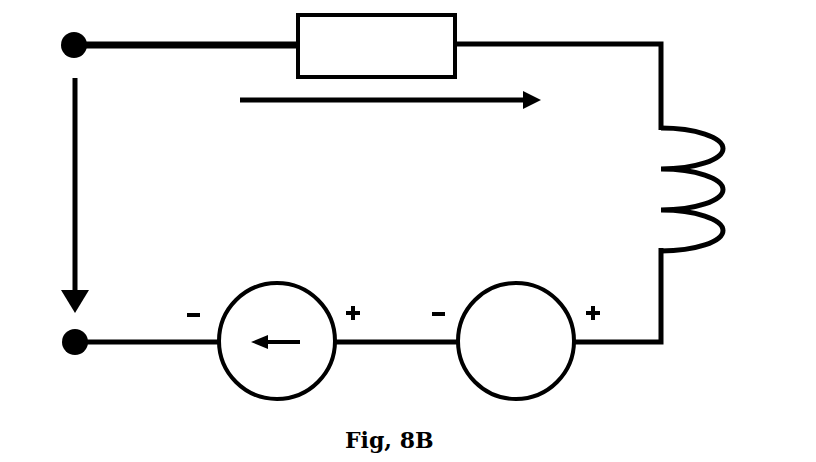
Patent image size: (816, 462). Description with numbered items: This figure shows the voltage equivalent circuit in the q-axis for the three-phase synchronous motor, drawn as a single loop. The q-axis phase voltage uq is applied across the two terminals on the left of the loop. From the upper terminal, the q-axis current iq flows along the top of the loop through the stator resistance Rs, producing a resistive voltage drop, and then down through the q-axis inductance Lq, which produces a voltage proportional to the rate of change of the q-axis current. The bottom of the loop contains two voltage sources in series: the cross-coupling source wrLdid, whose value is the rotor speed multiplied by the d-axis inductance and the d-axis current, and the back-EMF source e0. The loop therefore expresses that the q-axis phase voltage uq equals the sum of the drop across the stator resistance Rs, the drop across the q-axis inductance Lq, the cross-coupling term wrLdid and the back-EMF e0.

The q-axis phase voltage uq is at (52, 195).
The stator resistance Rs is at (376, 46).
The q-axis current iq is at (390, 129).
The q-axis inductance Lq is at (662, 189).
The cross-coupling voltage source wrLdid is at (273, 316).
The back-EMF voltage source e0 is at (516, 341).